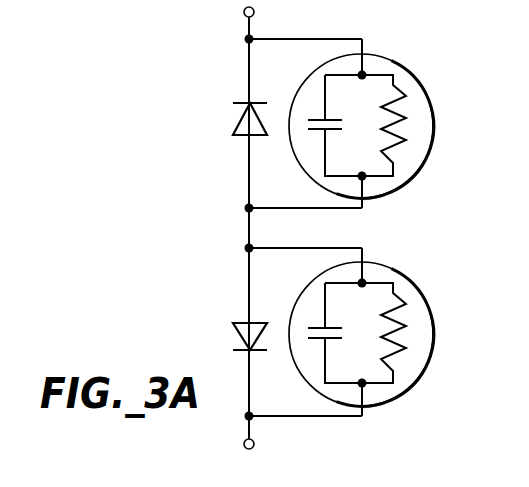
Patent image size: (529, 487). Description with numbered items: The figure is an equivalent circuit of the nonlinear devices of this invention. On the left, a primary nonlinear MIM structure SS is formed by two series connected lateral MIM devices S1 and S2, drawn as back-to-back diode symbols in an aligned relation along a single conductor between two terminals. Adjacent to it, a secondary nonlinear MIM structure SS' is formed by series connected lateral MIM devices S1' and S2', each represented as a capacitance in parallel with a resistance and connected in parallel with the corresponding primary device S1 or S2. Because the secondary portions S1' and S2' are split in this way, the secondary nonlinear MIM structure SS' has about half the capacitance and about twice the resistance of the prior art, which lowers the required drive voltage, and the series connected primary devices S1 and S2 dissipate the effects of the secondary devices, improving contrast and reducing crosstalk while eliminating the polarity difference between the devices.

The lateral MIM device S1 is at (220, 122).
The lateral MIM device S2 is at (220, 337).
The primary nonlinear MIM structure SS is at (207, 227).
The lateral MIM device S1' is at (386, 126).
The lateral MIM device S2' is at (386, 334).
The secondary nonlinear MIM structure SS' is at (397, 230).